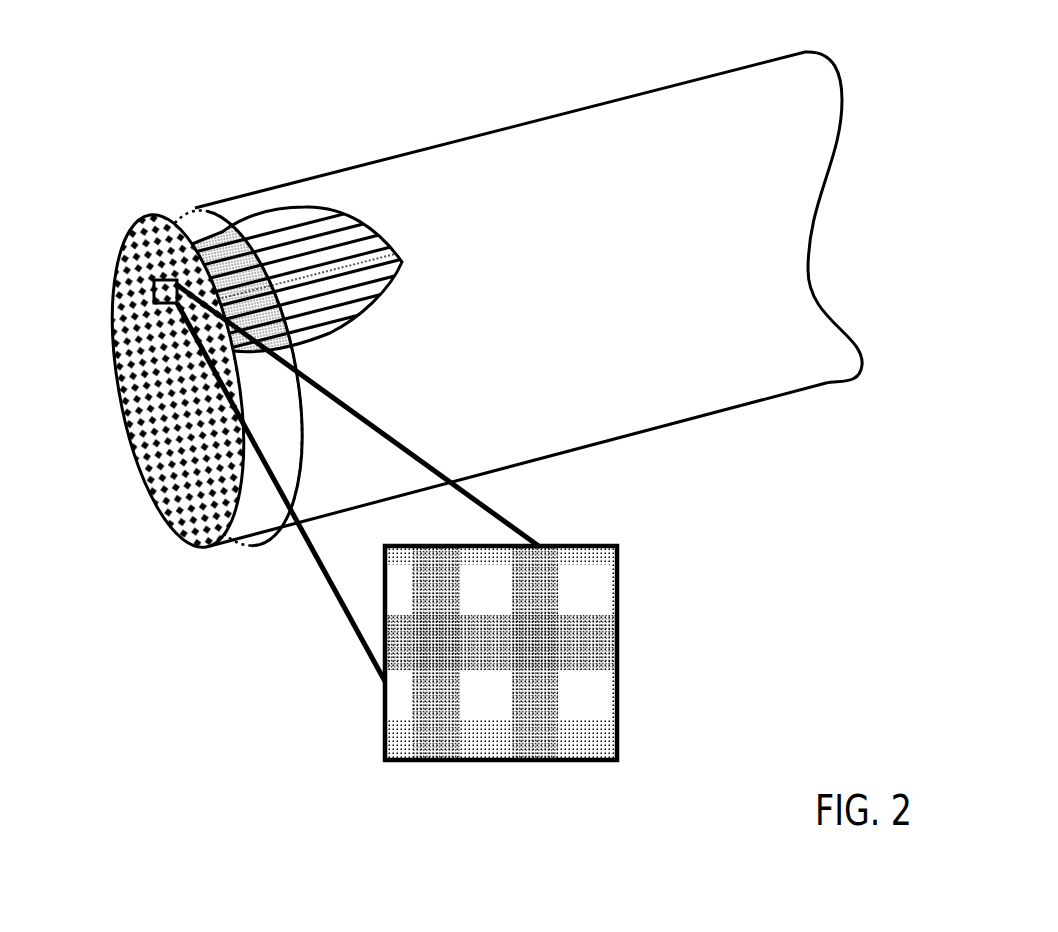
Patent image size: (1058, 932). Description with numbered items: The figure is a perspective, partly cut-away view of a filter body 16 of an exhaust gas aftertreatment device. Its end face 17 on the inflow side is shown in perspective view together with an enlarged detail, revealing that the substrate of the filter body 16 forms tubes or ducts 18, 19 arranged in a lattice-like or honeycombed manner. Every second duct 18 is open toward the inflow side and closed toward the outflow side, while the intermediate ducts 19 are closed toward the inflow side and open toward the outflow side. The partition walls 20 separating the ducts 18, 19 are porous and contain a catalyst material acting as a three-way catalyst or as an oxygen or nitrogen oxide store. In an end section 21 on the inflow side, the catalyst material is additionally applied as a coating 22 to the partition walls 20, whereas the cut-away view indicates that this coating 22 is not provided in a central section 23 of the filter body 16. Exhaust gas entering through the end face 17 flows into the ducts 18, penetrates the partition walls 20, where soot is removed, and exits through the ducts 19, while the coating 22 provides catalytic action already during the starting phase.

The filter body 16 is at (742, 34).
The end face 17 is at (118, 361).
The ducts 18 is at (493, 588).
The intermediate ducts 19 is at (570, 598).
The partition walls 20 is at (460, 647).
The end section 21 is at (178, 207).
The coating 22 is at (607, 722).
The central section 23 is at (377, 153).